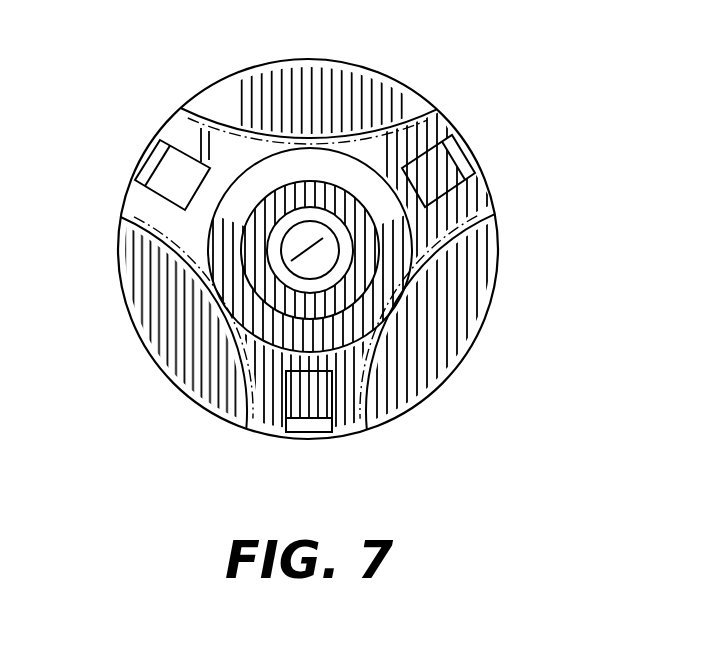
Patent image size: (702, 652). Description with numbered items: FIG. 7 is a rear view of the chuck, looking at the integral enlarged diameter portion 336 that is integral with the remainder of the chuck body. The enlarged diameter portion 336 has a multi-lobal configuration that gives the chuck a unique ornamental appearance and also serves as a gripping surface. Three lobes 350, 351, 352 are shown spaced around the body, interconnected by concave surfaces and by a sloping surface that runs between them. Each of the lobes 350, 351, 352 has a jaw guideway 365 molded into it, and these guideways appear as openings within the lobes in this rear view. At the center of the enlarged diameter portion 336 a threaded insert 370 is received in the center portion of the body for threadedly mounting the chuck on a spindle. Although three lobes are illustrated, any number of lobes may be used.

The integral enlarged diameter portion 336 is at (470, 205).
The lobe 350 is at (182, 120).
The lobe 351 is at (438, 111).
The lobe 352 is at (347, 437).
The jaw guideway 365 is at (148, 162).
The threaded insert 370 is at (322, 181).